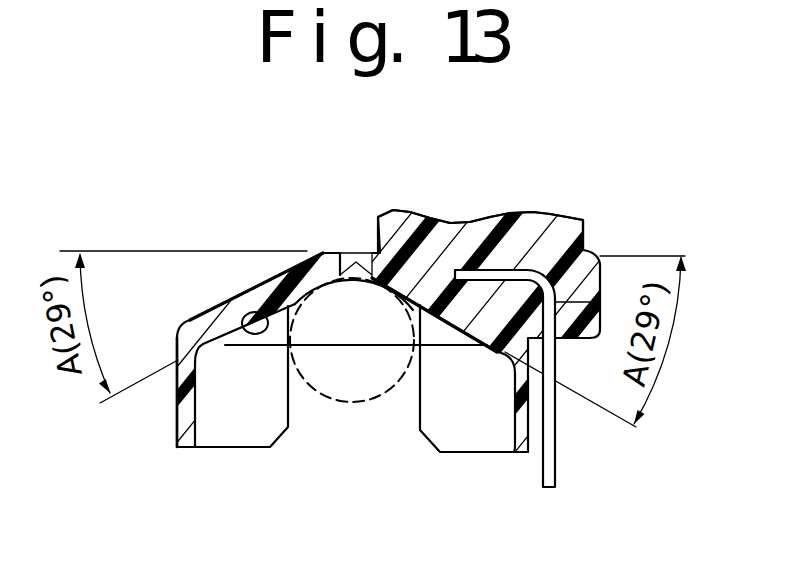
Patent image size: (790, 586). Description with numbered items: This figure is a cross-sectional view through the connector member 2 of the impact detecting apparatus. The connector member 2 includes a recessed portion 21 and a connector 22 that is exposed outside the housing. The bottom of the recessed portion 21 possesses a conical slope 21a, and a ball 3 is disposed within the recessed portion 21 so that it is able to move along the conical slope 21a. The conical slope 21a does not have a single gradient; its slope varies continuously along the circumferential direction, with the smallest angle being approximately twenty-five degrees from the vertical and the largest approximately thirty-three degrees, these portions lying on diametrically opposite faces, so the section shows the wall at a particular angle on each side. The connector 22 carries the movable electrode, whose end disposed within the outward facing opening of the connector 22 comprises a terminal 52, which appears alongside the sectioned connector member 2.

The connector member 2 is at (172, 432).
The ball 3 is at (347, 390).
The recessed portion 21 is at (432, 400).
The conical slope 21a is at (243, 312).
The connector 22 is at (550, 230).
The terminal 52 is at (547, 460).